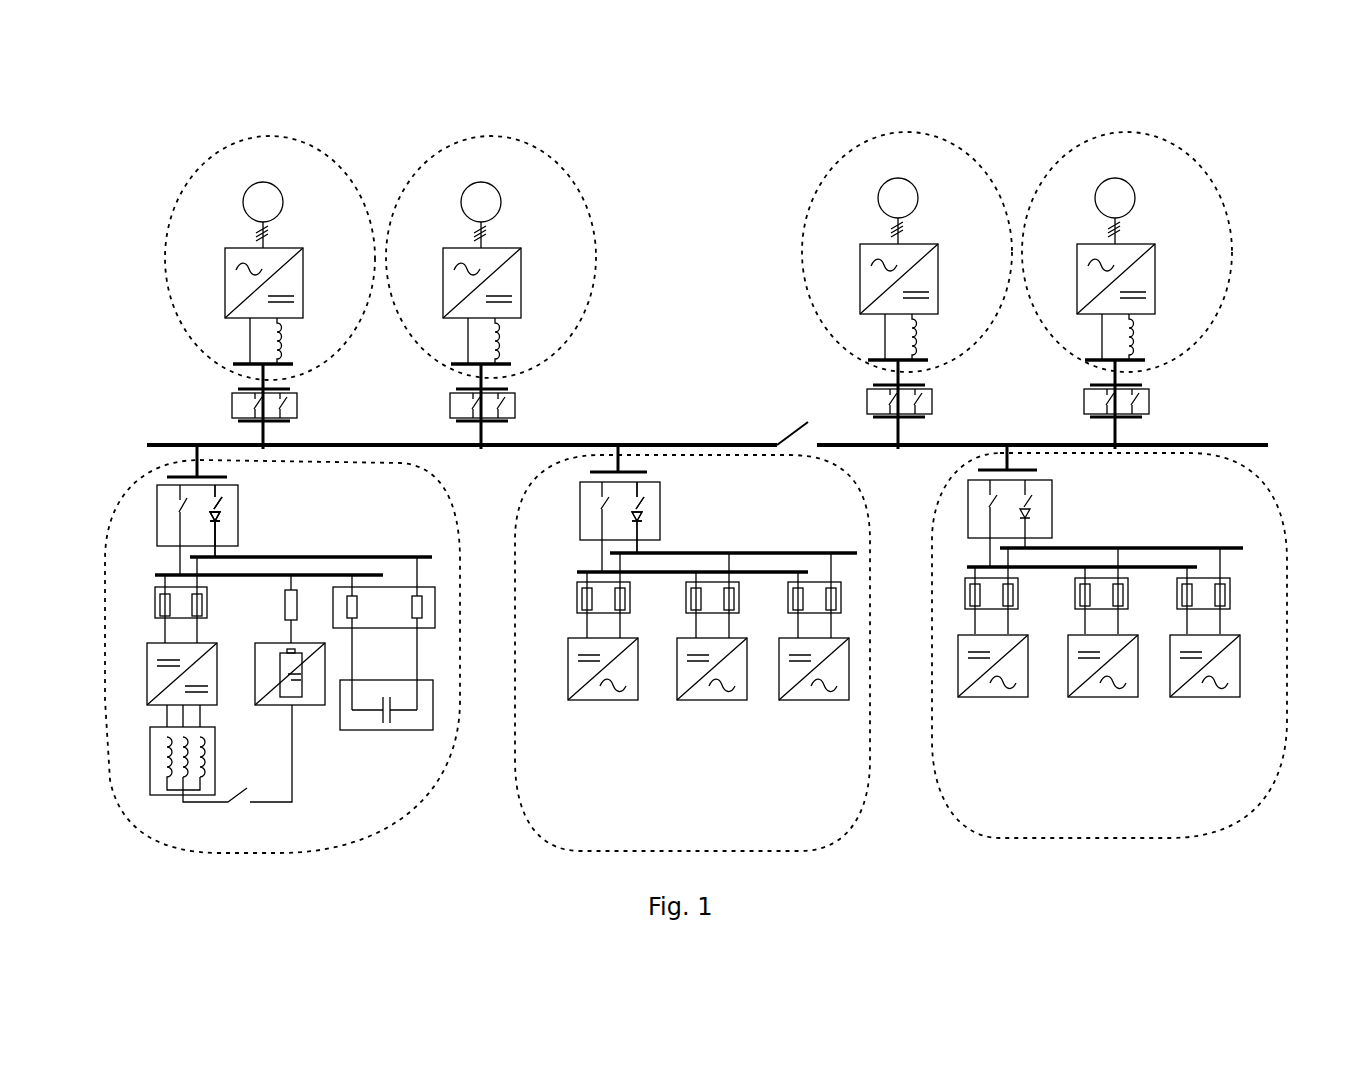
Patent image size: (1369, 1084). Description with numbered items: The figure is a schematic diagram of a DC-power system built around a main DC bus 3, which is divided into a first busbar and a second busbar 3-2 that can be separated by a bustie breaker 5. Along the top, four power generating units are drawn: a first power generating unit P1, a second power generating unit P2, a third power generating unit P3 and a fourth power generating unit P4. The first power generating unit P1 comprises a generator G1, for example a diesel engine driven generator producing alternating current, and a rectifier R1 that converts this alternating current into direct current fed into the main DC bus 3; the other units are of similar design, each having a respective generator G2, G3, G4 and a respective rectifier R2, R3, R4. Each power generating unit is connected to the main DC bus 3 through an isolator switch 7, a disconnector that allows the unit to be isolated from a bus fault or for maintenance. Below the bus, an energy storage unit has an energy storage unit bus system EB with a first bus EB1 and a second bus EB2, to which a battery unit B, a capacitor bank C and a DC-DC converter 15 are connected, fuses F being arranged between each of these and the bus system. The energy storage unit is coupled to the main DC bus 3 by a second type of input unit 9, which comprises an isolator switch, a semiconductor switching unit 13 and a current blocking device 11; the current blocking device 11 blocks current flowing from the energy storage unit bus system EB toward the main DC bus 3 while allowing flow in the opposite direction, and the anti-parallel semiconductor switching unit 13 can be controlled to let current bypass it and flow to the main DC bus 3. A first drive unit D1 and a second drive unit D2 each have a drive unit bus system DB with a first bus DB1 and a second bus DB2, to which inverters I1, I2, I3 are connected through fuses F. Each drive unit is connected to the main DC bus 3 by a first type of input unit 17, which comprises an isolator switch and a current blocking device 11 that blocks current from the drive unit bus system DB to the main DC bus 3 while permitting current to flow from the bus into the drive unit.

The first power generating unit P1 is at (168, 212).
The second power generating unit P2 is at (597, 230).
The third power generating unit P3 is at (805, 240).
The fourth power generating unit P4 is at (1230, 222).
The generator G1 is at (283, 196).
The generator G2 is at (516, 209).
The generator G3 is at (933, 205).
The generator G4 is at (1150, 205).
The rectifier R1 is at (303, 274).
The rectifier R2 is at (515, 306).
The rectifier R3 is at (932, 302).
The rectifier R4 is at (1149, 302).
The isolator switch 7 is at (297, 408).
The main DC bus 3 is at (580, 441).
The second busbar 3-2 is at (962, 446).
The bustie breaker 5 is at (796, 432).
The second type of input unit 9 is at (201, 510).
The current blocking device 11 is at (240, 479).
The semiconductor switching unit 13 is at (226, 532).
The first type of input unit 17 is at (662, 498).
The energy storage unit bus system EB is at (289, 546).
The first bus EB1 is at (355, 557).
The second bus EB2 is at (231, 577).
The DC-DC converter 15 is at (147, 690).
The battery unit B is at (318, 705).
The capacitor bank C is at (433, 712).
The fuses F is at (155, 602).
The drive unit bus system DB is at (714, 537).
The first bus DB1 is at (773, 553).
The second bus DB2 is at (772, 571).
The inverter I1 is at (598, 700).
The inverter I2 is at (712, 700).
The inverter I3 is at (817, 700).
The first drive unit D1 is at (843, 784).
The second drive unit D2 is at (1279, 737).